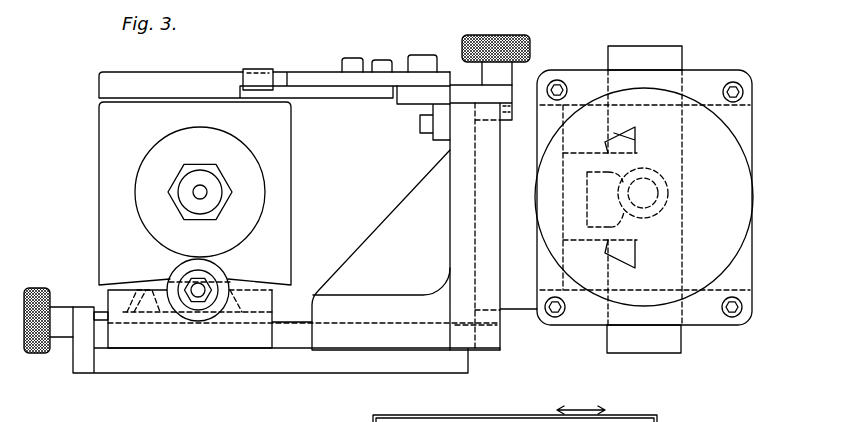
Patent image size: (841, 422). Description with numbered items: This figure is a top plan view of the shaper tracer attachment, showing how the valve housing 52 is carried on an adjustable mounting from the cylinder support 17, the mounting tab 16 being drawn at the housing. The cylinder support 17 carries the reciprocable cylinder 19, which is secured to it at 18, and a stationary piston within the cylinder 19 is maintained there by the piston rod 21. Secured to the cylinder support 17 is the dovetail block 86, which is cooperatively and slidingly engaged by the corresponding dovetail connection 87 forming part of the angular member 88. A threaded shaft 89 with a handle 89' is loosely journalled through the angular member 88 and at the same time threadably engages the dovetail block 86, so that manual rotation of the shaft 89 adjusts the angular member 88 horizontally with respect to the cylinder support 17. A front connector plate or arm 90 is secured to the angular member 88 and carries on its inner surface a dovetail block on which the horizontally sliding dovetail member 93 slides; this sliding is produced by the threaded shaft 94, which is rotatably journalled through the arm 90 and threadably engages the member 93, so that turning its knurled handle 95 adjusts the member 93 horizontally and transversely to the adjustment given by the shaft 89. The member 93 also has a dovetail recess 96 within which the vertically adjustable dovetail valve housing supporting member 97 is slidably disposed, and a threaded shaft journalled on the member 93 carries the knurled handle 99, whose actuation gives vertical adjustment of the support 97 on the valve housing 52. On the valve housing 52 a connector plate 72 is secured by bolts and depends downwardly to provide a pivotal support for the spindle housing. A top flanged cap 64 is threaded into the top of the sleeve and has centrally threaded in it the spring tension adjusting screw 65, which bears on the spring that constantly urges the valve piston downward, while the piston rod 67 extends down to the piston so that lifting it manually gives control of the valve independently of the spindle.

The mounting tab 16 is at (645, 342).
The cylinder support 17 is at (547, 136).
The cylinder securing point 18 is at (730, 312).
The reciprocable cylinder 19 is at (692, 115).
The piston rod 21 is at (647, 200).
The valve housing 52 is at (118, 146).
The top flanged cap 64 is at (150, 216).
The spring tension adjusting screw 65 is at (173, 173).
The piston rod 67 is at (197, 193).
The connector plate 72 is at (115, 87).
The dovetail block 86 is at (517, 302).
The dovetail connection 87 is at (487, 345).
The angular member 88 is at (395, 230).
The threaded shaft 89 is at (519, 110).
The handle 89' is at (510, 44).
The front connector plate or arm 90 is at (392, 367).
The horizontally sliding dovetail member 93 is at (195, 337).
The threaded shaft 94 is at (100, 310).
The knurled handle 95 is at (33, 357).
The dovetail recess 96 is at (136, 320).
The dovetail valve housing supporting member 97 is at (160, 312).
The knurled handle 99 is at (220, 277).